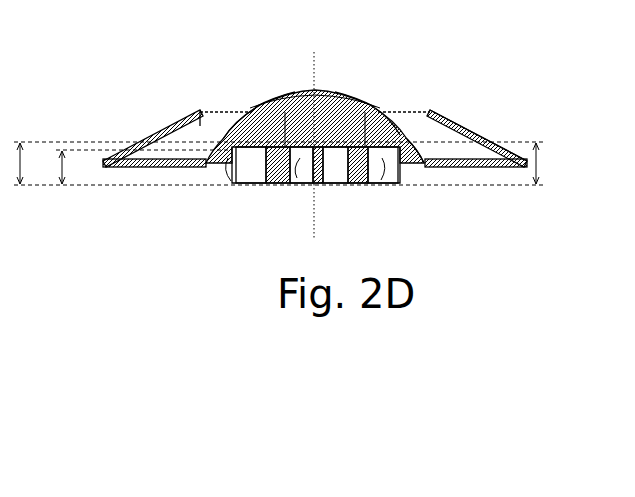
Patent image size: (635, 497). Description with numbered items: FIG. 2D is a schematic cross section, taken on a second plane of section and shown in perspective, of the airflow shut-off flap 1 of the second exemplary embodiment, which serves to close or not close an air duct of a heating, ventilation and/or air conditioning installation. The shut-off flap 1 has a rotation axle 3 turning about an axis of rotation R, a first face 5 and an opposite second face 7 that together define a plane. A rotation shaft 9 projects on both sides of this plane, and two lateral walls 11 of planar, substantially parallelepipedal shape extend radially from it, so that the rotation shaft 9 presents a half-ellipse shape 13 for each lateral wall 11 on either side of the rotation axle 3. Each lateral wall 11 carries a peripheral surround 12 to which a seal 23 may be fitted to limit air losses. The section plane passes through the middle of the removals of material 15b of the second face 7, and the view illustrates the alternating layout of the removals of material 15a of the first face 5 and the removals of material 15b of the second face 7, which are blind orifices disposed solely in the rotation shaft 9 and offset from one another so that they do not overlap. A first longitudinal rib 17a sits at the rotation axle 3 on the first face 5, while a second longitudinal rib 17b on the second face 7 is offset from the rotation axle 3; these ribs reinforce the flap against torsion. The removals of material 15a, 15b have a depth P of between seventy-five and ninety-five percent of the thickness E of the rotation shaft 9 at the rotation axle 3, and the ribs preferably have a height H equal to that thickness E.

The airflow shut-off flap 1 is at (336, 137).
The rotation axle 3 is at (343, 97).
The first face 5 is at (154, 180).
The second face 7 is at (428, 102).
The rotation shaft 9 is at (387, 110).
The lateral wall 11 is at (207, 113).
The peripheral surround 12 is at (450, 110).
The half-ellipse shape 13 is at (253, 112).
The first row of removals of material 15a is at (230, 184).
The second row of removals of material 15b is at (260, 111).
The first longitudinal rib 17a is at (320, 184).
The second longitudinal rib 17b is at (291, 110).
The seal 23 is at (160, 130).
The axis of rotation R is at (317, 60).
The height of the longitudinal ribs H is at (13, 163).
The depth of the removals of material P is at (55, 167).
The thickness of the rotation shaft E is at (544, 163).